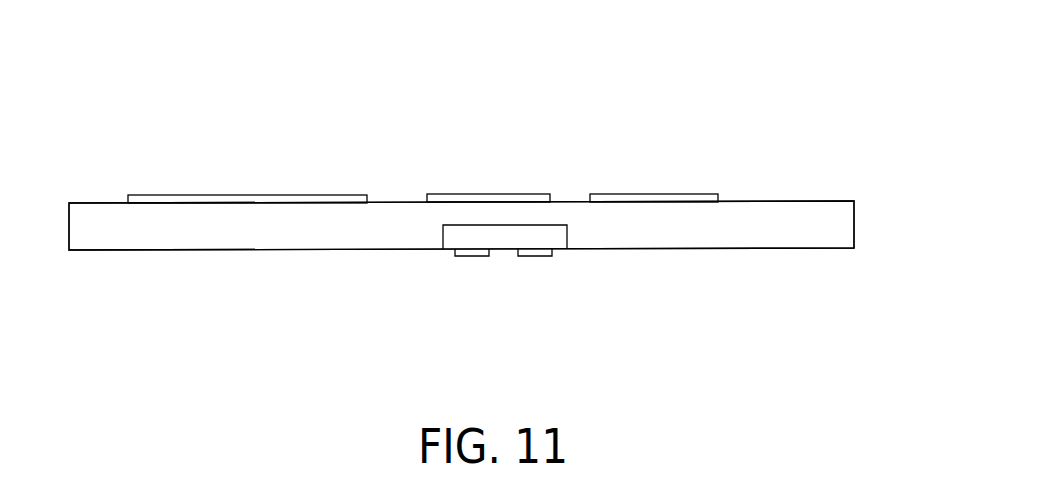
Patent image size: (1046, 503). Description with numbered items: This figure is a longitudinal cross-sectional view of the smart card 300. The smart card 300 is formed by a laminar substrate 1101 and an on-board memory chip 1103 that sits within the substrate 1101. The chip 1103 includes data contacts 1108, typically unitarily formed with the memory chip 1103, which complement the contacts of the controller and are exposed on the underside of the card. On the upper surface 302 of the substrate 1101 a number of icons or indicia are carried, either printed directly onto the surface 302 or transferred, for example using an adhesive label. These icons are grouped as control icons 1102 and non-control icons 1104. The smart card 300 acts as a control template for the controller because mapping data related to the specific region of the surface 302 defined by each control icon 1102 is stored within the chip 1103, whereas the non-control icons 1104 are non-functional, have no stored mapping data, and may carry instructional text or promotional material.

The smart card 300 is at (750, 79).
The upper surface 302 is at (806, 197).
The laminar substrate 1101 is at (135, 246).
The control icons 1102 is at (453, 184).
The memory chip 1103 is at (445, 255).
The non-control icons 1104 is at (618, 188).
The data contacts 1108 is at (525, 262).